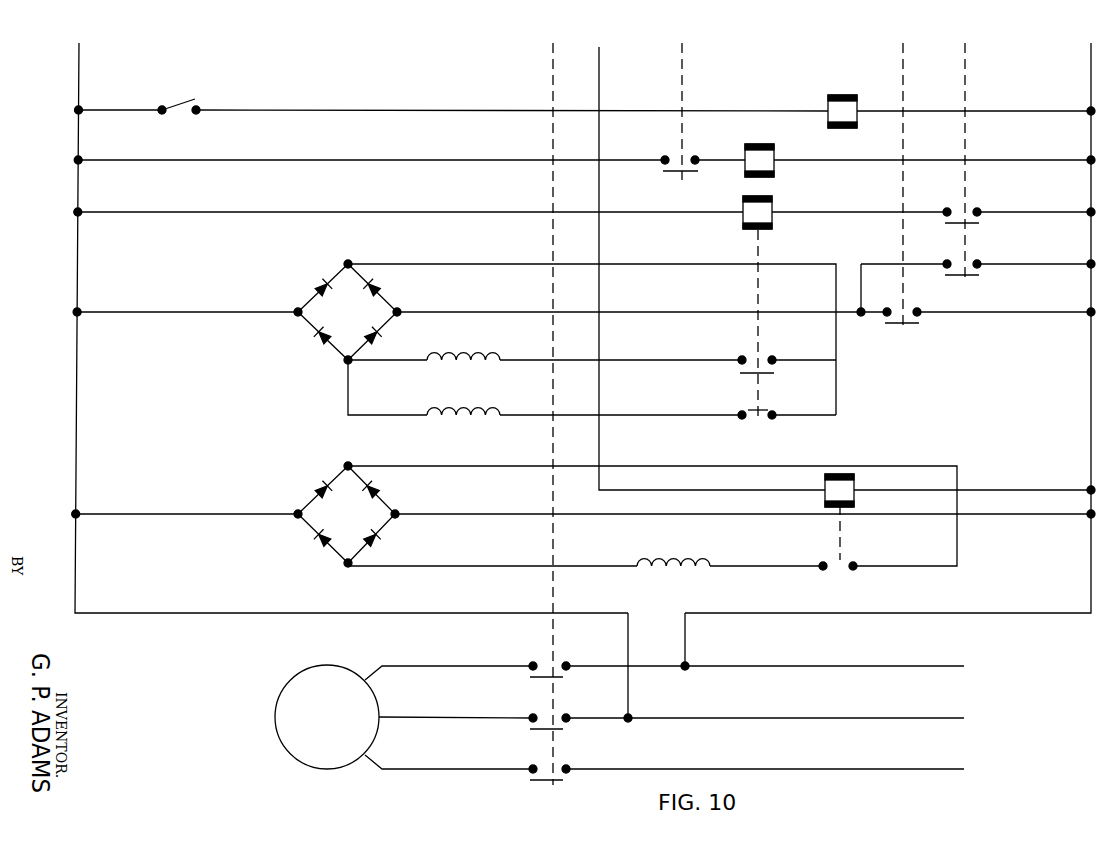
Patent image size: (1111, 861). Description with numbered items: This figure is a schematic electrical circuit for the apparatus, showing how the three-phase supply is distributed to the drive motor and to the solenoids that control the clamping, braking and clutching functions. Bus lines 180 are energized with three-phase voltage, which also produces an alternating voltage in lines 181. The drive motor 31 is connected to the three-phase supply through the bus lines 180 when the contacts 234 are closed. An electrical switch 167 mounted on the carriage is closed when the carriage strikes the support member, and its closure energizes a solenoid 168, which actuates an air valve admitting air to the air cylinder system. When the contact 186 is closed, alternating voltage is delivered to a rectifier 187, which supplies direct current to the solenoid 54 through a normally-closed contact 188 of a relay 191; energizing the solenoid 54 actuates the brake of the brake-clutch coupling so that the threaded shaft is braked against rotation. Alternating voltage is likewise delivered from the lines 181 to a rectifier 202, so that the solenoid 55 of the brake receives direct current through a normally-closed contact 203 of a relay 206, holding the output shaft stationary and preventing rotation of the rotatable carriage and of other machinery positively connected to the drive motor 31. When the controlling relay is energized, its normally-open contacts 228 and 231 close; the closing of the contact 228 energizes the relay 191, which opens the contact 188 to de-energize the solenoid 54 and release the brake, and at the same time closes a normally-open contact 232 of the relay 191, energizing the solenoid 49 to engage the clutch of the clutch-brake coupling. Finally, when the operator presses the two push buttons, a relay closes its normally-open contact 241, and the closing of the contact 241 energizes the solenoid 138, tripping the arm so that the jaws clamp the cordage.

The drive motor 31 is at (313, 769).
The solenoid 49 is at (480, 359).
The solenoid 54 is at (478, 414).
The solenoid 55 is at (700, 565).
The solenoid 138 is at (775, 158).
The electrical switch 167 is at (178, 102).
The solenoid 168 is at (858, 103).
The bus lines 180 is at (808, 667).
The lines 181 is at (75, 410).
The contact 186 is at (907, 326).
The rectifier 187 is at (310, 323).
The normally-closed contact 188 is at (764, 417).
The relay 191 is at (773, 208).
The rectifier 202 is at (310, 531).
The normally-closed contact 203 is at (843, 568).
The relay 206 is at (855, 479).
The normally-open contact 228 is at (975, 224).
The normally-open contact 231 is at (968, 276).
The normally-open contact 232 is at (767, 375).
The contacts 234 is at (560, 678).
The normally-open contact 241 is at (686, 172).